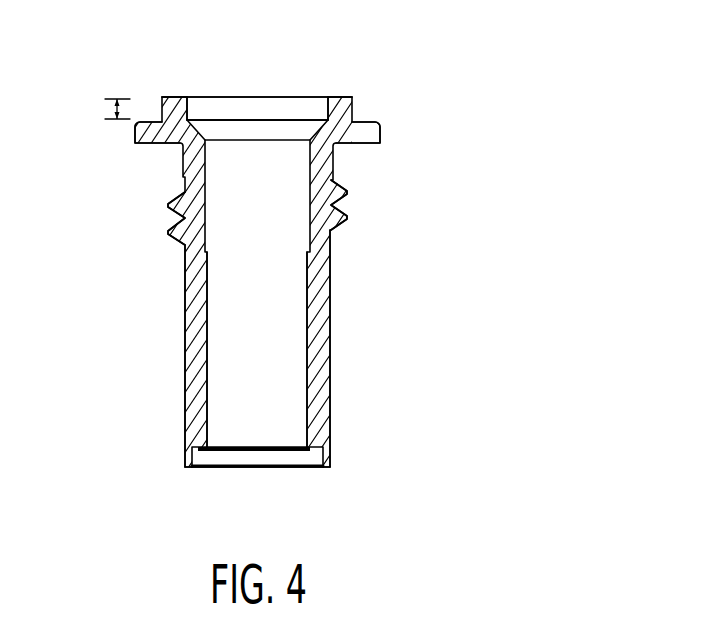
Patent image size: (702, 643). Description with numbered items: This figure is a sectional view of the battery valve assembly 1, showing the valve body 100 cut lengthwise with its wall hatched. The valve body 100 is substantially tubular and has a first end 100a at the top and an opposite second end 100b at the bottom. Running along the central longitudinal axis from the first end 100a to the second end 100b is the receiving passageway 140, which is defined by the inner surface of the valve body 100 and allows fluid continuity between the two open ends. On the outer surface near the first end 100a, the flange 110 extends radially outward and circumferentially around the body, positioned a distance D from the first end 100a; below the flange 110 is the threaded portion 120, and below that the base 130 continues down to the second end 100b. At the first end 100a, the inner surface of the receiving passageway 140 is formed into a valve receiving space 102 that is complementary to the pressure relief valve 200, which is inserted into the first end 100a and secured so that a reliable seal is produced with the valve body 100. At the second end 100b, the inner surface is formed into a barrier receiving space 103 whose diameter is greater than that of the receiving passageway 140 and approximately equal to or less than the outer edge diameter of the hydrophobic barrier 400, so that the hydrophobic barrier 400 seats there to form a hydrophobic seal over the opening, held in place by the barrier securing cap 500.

The battery valve assembly 1 is at (412, 92).
The valve body 100 is at (177, 177).
The first end 100a is at (177, 97).
The second end 100b is at (185, 443).
The valve receiving space 102 is at (300, 112).
The barrier receiving space 103 is at (287, 458).
The flange 110 is at (382, 137).
The threaded portion 120 is at (345, 203).
The base 130 is at (325, 333).
The receiving passageway 140 is at (278, 388).
The pressure relief valve 200 is at (232, 110).
The hydrophobic barrier 400 is at (228, 460).
The barrier securing cap 500 is at (307, 468).